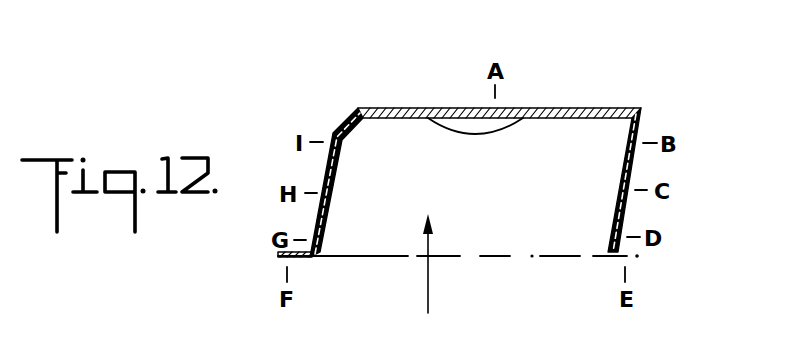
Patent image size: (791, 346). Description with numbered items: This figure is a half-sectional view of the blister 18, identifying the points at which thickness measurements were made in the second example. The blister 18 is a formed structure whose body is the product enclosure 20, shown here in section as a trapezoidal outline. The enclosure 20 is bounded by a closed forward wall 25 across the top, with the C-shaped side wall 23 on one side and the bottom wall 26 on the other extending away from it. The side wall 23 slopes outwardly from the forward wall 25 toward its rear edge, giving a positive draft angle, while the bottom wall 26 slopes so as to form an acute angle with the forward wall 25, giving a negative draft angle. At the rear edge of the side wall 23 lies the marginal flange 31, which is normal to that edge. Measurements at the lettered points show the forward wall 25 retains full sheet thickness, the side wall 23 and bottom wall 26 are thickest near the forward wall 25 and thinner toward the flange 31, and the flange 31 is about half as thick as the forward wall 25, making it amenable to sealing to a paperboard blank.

The blister 18 is at (491, 134).
The product enclosure 20 is at (440, 280).
The C-shaped side wall 23 is at (327, 167).
The forward wall 25 is at (582, 108).
The bottom wall 26 is at (635, 161).
The marginal flange 31 is at (272, 257).